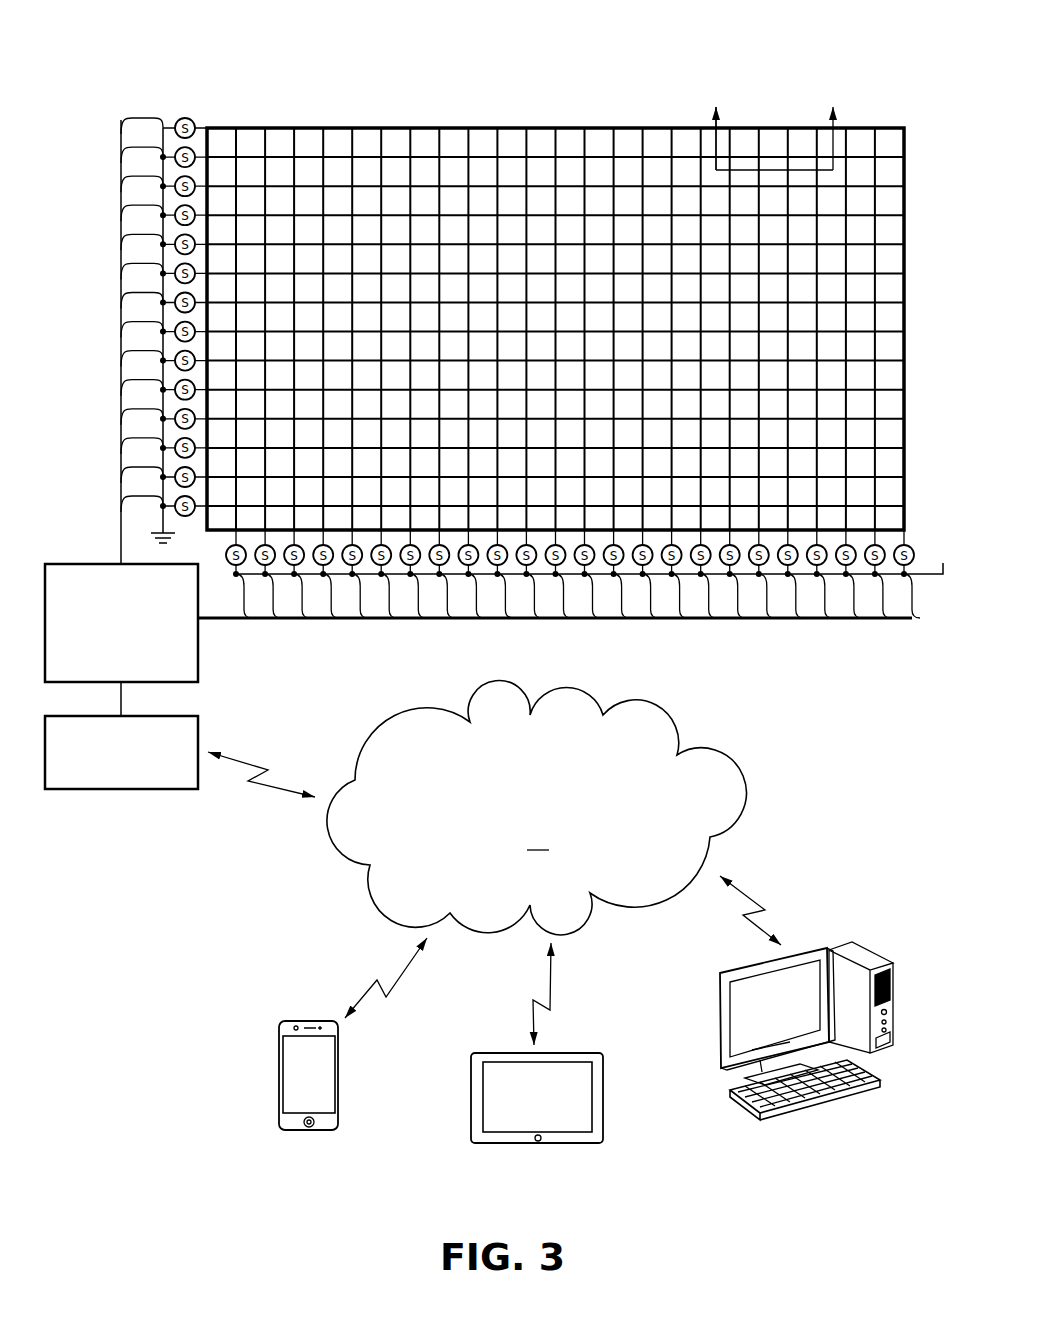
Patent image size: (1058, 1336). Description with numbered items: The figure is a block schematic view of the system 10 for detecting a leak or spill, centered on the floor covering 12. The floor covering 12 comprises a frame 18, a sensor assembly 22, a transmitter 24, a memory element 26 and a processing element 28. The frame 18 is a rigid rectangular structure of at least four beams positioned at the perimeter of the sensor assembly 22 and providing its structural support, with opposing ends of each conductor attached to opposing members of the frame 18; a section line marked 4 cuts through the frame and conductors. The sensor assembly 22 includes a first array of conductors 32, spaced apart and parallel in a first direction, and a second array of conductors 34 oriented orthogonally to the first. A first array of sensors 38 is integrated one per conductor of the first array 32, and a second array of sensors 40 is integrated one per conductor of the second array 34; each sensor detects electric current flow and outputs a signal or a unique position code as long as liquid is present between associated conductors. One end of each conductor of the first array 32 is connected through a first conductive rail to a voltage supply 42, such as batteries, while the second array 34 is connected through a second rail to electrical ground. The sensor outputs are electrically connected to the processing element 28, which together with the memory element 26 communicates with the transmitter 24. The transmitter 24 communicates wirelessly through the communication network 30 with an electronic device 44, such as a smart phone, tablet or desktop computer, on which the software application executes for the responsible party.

The system 10 is at (503, 592).
The floor covering 12 is at (575, 293).
The section line 4- 4 is at (775, 124).
The frame 18 is at (907, 198).
The first array of conductors 32 is at (395, 157).
The second array of conductors 34 is at (818, 377).
The first array of sensors 38 is at (196, 116).
The second array of sensors 40 is at (915, 531).
The voltage supply 42 is at (952, 561).
The sensor assembly 22 is at (718, 629).
The memory element 26 is at (176, 401).
The processing element 28 is at (198, 662).
The transmitter 24 is at (77, 792).
The communication network 30 is at (494, 863).
The electronic device 44 is at (301, 1136).